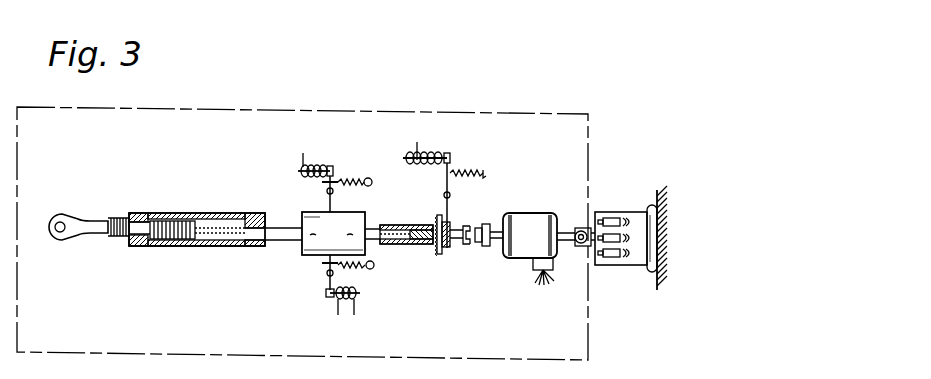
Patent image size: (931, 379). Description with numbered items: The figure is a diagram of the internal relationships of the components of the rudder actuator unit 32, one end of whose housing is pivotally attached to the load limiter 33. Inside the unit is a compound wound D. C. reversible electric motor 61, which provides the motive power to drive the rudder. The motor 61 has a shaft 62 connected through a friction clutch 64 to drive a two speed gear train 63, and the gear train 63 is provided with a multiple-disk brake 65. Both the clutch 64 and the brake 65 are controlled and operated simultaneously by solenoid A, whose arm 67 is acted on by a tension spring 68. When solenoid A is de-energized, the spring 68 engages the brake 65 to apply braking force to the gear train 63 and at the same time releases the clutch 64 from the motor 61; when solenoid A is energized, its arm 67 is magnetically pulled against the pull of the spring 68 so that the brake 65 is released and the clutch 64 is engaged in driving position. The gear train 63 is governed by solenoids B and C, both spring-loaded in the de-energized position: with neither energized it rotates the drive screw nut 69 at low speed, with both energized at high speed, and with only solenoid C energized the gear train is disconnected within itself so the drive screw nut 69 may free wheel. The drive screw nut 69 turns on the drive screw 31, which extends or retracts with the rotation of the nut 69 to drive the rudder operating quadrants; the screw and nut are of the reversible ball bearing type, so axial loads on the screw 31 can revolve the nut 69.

The drive screw 31 is at (110, 237).
The drive screw nut 69 is at (160, 184).
The two speed gear train 63 is at (290, 282).
The arm 67 is at (460, 170).
The tension spring 68 is at (506, 164).
The shaft 62 is at (493, 232).
The compound wound D. C. reversible electric motor 61 is at (534, 218).
The load limiter 33 is at (718, 183).
The friction clutch 64 is at (500, 282).
The multiple-disk brake 65 is at (432, 258).
The rudder actuator unit 32 is at (447, 378).